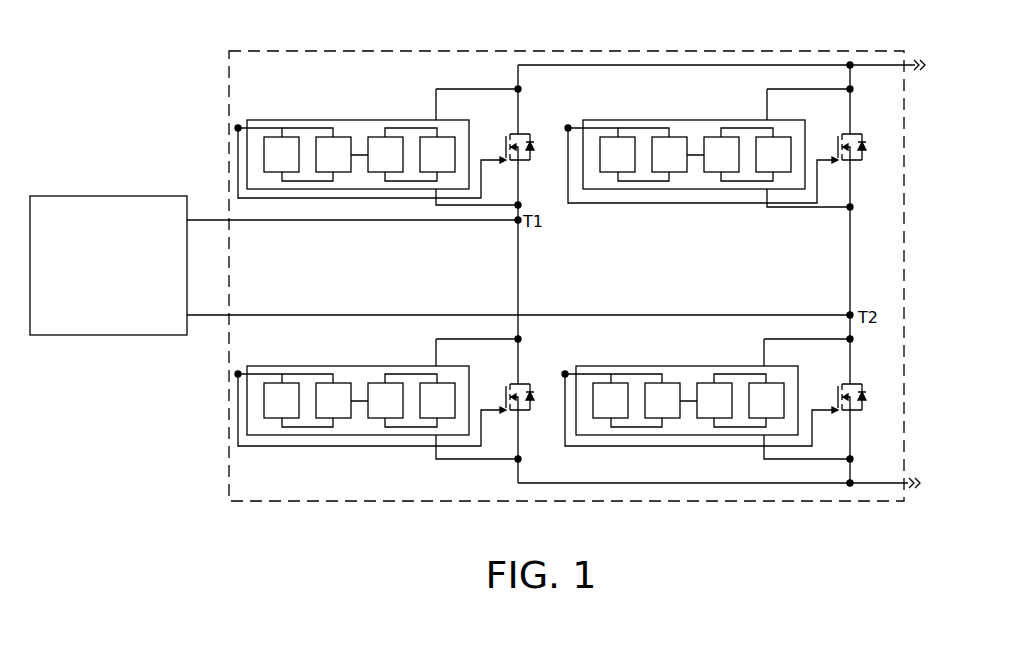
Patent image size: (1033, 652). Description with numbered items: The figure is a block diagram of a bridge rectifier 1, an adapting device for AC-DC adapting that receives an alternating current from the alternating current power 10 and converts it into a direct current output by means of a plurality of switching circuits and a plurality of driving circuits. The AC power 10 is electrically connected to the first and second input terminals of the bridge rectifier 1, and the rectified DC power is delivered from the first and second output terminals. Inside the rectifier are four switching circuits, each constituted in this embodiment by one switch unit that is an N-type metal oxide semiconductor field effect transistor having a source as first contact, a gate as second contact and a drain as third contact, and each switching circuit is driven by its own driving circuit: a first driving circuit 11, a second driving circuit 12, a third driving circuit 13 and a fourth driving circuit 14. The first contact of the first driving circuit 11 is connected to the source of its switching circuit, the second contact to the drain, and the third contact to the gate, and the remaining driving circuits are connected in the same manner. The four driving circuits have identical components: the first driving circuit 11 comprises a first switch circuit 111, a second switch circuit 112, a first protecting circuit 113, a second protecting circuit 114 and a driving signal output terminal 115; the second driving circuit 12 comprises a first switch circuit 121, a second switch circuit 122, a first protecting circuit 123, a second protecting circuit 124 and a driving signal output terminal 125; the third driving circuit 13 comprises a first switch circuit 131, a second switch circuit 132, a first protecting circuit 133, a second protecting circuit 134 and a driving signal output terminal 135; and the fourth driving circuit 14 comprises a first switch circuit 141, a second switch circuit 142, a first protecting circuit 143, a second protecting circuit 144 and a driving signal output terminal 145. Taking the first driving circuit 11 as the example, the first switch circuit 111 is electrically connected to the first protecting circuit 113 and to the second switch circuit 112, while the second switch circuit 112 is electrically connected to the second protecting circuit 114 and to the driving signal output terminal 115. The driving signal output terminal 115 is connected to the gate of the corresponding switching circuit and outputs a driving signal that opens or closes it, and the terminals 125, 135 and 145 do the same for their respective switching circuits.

The bridge rectifier 1 is at (829, 51).
The alternating current power 10 is at (103, 196).
The first driving circuit 11 is at (358, 133).
The second driving circuit 12 is at (694, 131).
The third driving circuit 13 is at (358, 379).
The fourth driving circuit 14 is at (687, 379).
The first switch circuit 111 is at (385, 154).
The second switch circuit 112 is at (333, 154).
The first protecting circuit 113 is at (437, 154).
The second protecting circuit 114 is at (281, 154).
The driving signal output terminal 115 is at (238, 128).
The first switch circuit 121 is at (721, 154).
The second switch circuit 122 is at (669, 154).
The first protecting circuit 123 is at (773, 154).
The second protecting circuit 124 is at (617, 154).
The driving signal output terminal 125 is at (568, 128).
The first switch circuit 131 is at (385, 400).
The second switch circuit 132 is at (333, 400).
The first protecting circuit 133 is at (437, 400).
The second protecting circuit 134 is at (281, 400).
The driving signal output terminal 135 is at (238, 374).
The first switch circuit 141 is at (714, 400).
The second switch circuit 142 is at (662, 400).
The first protecting circuit 143 is at (766, 400).
The second protecting circuit 144 is at (610, 400).
The driving signal output terminal 145 is at (565, 374).